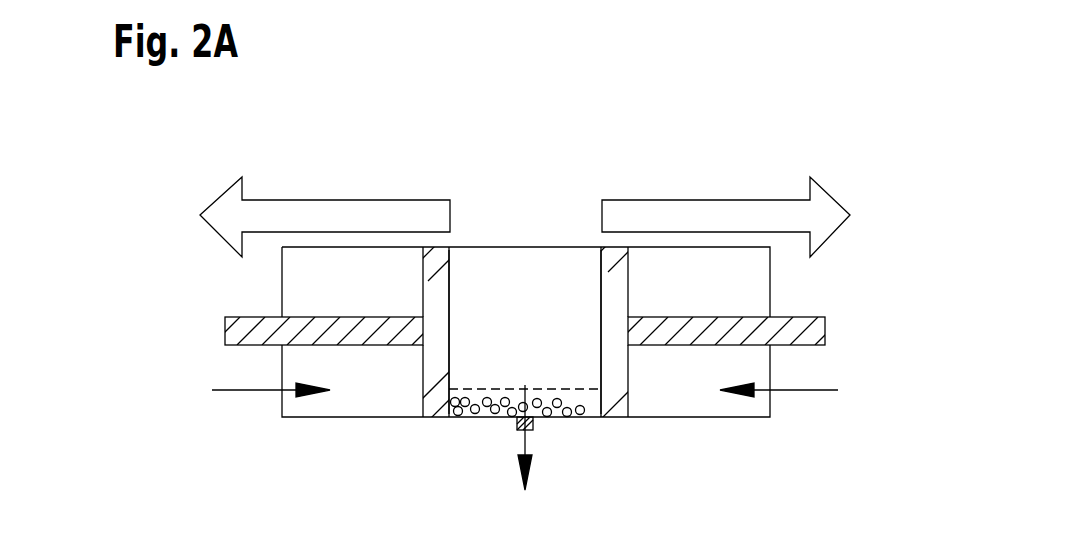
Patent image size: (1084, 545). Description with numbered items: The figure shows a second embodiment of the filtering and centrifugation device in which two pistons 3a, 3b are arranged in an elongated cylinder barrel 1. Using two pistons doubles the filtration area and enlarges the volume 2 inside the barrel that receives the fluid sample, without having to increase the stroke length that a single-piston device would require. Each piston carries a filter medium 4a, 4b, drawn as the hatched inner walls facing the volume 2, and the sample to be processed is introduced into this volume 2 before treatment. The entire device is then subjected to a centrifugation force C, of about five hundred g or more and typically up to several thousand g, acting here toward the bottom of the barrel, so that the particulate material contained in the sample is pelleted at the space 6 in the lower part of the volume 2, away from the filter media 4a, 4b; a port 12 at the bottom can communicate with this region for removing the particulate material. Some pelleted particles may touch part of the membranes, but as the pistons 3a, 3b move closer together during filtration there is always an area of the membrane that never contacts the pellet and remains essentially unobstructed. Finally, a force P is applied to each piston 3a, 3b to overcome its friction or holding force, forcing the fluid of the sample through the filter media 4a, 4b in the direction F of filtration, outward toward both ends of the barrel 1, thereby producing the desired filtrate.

The elongated cylinder barrel 1 is at (697, 417).
The volume 2 is at (475, 360).
The piston 3a is at (612, 417).
The piston 3b is at (435, 417).
The filter medium 4a is at (462, 266).
The filter medium 4b is at (591, 268).
The space 6 is at (580, 398).
The port 12 is at (523, 420).
The centrifugation force C is at (535, 437).
The force P is at (525, 380).
The direction of filtration F is at (525, 209).